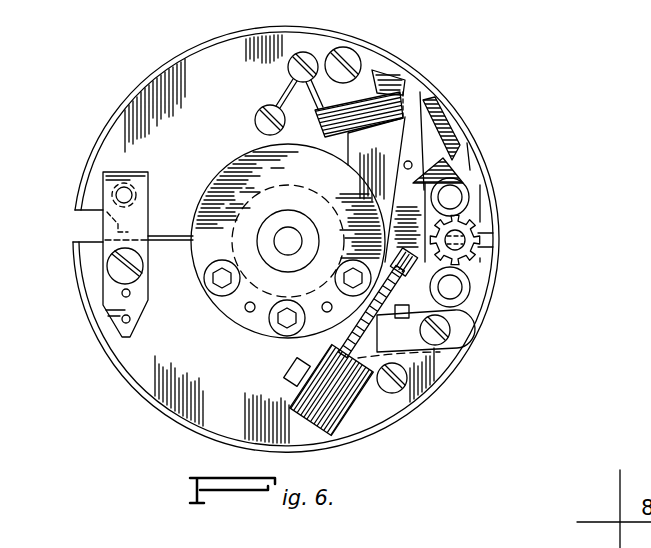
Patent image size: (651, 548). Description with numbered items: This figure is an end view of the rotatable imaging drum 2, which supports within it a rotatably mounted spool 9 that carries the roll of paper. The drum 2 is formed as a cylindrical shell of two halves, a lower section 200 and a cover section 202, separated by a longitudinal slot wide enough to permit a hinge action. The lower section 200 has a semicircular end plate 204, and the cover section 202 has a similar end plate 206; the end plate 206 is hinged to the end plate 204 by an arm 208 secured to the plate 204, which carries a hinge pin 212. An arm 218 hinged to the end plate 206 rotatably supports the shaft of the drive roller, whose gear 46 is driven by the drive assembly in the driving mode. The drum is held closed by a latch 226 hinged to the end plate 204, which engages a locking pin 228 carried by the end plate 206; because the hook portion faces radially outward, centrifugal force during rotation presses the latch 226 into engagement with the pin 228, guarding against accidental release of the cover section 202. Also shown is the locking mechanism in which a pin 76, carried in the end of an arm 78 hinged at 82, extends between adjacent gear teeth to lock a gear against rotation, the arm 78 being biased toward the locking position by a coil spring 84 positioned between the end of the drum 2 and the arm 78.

The rotatable drum 2 is at (277, 20).
The spool 9 is at (240, 173).
The gear 46 is at (493, 233).
The pin 76 is at (448, 262).
The arm 78 is at (410, 350).
The hinge 82 is at (355, 408).
The coil spring 84 is at (440, 392).
The lower section 200 is at (178, 425).
The cover section 202 is at (337, 45).
The end plate 204 is at (138, 355).
The end plate 206 is at (197, 65).
The arm 208 is at (100, 228).
The hinge pin 212 is at (118, 195).
The arm 218 is at (403, 85).
The latch 226 is at (458, 163).
The locking pin 228 is at (469, 195).